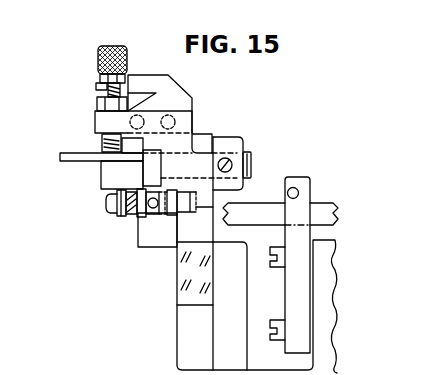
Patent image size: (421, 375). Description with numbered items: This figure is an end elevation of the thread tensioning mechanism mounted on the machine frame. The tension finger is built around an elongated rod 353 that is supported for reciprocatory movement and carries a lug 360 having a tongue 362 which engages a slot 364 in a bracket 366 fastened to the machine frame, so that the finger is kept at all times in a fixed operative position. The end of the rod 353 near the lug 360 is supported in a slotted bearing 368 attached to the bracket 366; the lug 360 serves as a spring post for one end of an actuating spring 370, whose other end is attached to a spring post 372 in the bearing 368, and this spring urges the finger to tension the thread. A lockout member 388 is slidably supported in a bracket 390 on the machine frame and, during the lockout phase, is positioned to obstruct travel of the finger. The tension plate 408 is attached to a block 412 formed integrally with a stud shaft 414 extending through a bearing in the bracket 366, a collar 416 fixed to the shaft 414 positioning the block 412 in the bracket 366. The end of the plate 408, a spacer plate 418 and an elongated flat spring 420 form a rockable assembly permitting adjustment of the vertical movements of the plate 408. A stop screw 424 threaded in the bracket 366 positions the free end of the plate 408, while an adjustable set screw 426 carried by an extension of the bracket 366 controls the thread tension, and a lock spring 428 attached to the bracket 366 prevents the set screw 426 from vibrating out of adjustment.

The elongated rod 353 is at (138, 217).
The lug 360 is at (110, 196).
The tongue 362 is at (176, 212).
The slot 364 is at (184, 179).
The bracket 366 is at (110, 122).
The slotted bearing 368 is at (162, 232).
The actuating spring 370 is at (114, 208).
The spring post 372 is at (120, 214).
The lockout member 388 is at (320, 208).
The bracket 390 is at (302, 280).
The tension plate 408 is at (70, 157).
The block 412 is at (112, 171).
The stud shaft 414 is at (266, 150).
The collar 416 is at (233, 147).
The spacer plate 418 is at (101, 145).
The elongated flat spring 420 is at (101, 141).
The stop screw 424 is at (99, 81).
The adjustable set screw 426 is at (98, 48).
The lock spring 428 is at (186, 76).